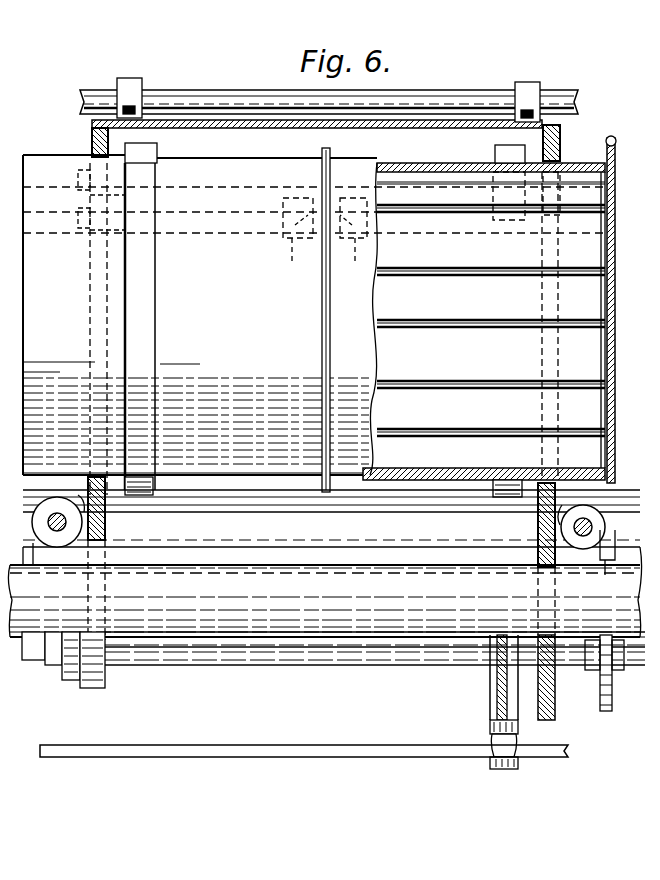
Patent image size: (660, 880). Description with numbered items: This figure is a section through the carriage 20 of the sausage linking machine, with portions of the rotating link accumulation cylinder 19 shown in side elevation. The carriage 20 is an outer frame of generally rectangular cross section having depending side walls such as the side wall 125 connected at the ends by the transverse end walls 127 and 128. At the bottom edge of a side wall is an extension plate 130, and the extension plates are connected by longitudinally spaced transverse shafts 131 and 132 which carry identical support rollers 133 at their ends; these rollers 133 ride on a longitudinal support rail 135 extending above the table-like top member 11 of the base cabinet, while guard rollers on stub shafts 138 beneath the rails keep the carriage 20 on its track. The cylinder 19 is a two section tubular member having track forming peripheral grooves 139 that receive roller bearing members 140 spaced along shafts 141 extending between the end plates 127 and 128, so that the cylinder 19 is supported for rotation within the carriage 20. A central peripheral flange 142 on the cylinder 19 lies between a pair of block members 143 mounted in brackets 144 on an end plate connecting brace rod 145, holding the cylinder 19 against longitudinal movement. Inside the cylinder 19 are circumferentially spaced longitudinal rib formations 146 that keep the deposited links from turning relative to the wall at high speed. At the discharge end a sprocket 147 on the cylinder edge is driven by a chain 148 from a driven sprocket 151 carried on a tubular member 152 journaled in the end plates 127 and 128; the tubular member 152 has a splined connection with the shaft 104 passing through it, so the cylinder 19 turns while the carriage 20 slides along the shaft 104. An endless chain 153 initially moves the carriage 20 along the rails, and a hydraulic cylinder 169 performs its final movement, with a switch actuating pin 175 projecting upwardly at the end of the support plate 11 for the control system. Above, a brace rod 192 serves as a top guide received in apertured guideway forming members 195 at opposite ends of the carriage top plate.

The table-like top member 11 is at (264, 746).
The link accumulation cylinder 19 is at (572, 172).
The carriage 20 is at (90, 128).
The shaft 104 is at (33, 660).
The side wall 125 is at (5, 186).
The end wall 127 is at (107, 531).
The end wall 128 is at (537, 531).
The extension plate 130 is at (14, 463).
The shaft 131 is at (56, 516).
The shaft 132 is at (593, 526).
The support roller 133 is at (583, 506).
The support rail 135 is at (350, 548).
The stub shaft 138 is at (30, 550).
The peripheral groove 139 is at (143, 310).
The roller bearing member 140 is at (157, 152).
The shaft 141 is at (360, 168).
The central peripheral flange 142 is at (332, 318).
The block member 143 is at (280, 236).
The bracket 144 is at (325, 267).
The brace rod 145 is at (474, 236).
The rib formation 146 is at (456, 286).
The sprocket 147 is at (620, 150).
The chain 148 is at (606, 546).
The driven sprocket 151 is at (600, 688).
The tubular member 152 is at (365, 650).
The endless chain 153 is at (393, 666).
The hydraulic cylinder 169 is at (324, 592).
The switch actuating pin 175 is at (491, 702).
The brace rod 192 is at (188, 92).
The guideway forming member 195 is at (123, 82).